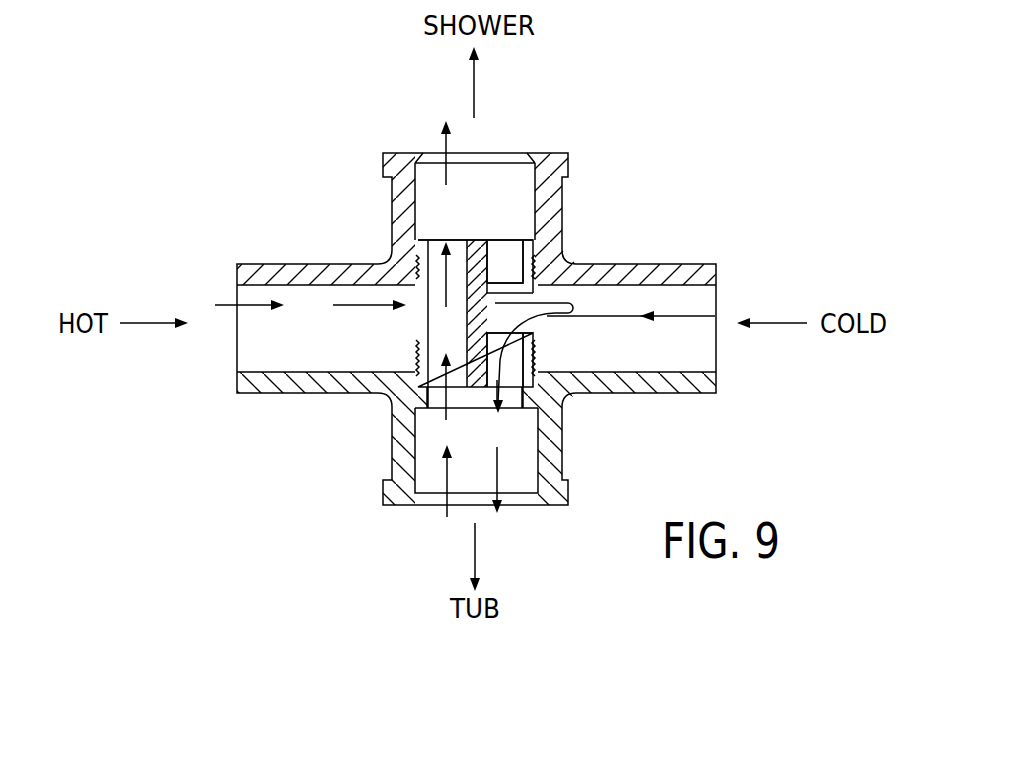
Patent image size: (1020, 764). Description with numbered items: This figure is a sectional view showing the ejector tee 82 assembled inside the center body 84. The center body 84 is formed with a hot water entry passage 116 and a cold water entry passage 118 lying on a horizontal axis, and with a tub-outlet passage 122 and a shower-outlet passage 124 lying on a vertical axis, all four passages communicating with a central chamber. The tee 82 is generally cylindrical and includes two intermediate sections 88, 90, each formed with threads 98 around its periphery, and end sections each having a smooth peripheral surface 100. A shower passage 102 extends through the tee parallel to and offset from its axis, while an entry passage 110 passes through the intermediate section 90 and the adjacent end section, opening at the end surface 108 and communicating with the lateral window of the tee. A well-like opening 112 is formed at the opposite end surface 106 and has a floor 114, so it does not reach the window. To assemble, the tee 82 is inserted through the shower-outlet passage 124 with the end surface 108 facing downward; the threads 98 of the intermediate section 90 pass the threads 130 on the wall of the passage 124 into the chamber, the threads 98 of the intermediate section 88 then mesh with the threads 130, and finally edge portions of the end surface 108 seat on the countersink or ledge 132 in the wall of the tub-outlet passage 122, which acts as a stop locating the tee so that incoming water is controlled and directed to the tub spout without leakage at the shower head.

The ejector tee 82 is at (377, 348).
The center body 84 is at (630, 126).
The intermediate section 88 is at (546, 257).
The intermediate section 90 is at (552, 340).
The threads 98 is at (392, 263).
The smooth peripheral surface 100 is at (391, 423).
The shower passage 102 is at (460, 240).
The end surface 106 is at (473, 240).
The end surface 108 is at (475, 398).
The entry passage 110 is at (527, 380).
The well-like opening 112 is at (540, 245).
The floor 114 is at (514, 282).
The hot water entry passage 116 is at (256, 374).
The cold water entry passage 118 is at (692, 374).
The tub-outlet passage 122 is at (537, 480).
The shower-outlet passage 124 is at (533, 172).
The threads 130 is at (553, 262).
The countersink or ledge 132 is at (537, 398).